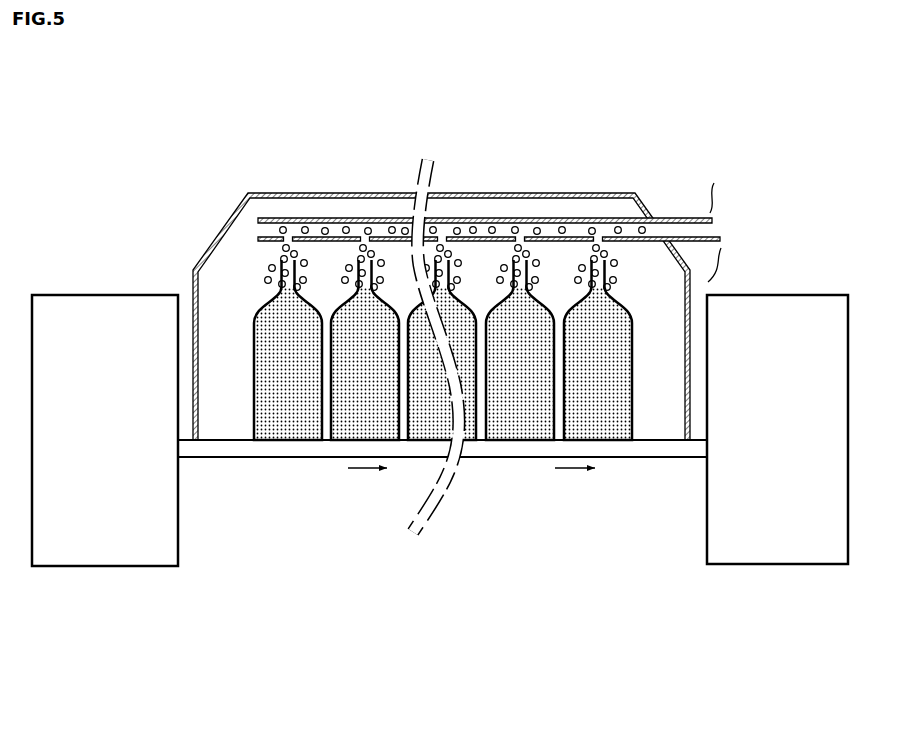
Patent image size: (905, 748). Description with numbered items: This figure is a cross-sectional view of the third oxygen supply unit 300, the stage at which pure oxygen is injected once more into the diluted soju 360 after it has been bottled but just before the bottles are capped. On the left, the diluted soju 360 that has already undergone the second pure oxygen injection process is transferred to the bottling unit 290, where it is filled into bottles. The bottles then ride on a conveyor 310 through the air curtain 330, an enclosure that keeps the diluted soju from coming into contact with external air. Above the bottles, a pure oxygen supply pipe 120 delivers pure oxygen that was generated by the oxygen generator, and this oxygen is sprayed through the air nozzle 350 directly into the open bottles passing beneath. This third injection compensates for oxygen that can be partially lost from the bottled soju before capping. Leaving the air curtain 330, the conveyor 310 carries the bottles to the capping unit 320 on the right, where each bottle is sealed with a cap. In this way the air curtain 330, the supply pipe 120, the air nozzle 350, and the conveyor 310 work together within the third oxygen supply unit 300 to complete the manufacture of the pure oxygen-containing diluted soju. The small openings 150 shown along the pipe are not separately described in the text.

The pure oxygen supply pipe 120 is at (672, 213).
The nozzle holes 150 is at (519, 244).
The bottling unit 290 is at (117, 540).
The third oxygen supply unit 300 is at (453, 162).
The conveyor 310 is at (512, 450).
The capping unit 320 is at (770, 537).
The air curtain 330 is at (315, 193).
The air nozzle 350 is at (596, 245).
The diluted soju 360 is at (293, 418).